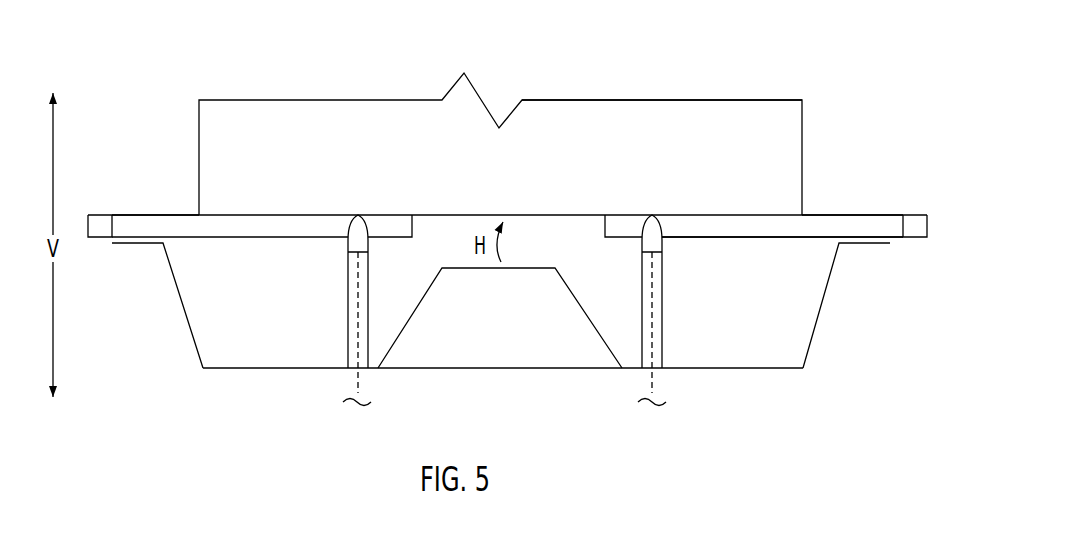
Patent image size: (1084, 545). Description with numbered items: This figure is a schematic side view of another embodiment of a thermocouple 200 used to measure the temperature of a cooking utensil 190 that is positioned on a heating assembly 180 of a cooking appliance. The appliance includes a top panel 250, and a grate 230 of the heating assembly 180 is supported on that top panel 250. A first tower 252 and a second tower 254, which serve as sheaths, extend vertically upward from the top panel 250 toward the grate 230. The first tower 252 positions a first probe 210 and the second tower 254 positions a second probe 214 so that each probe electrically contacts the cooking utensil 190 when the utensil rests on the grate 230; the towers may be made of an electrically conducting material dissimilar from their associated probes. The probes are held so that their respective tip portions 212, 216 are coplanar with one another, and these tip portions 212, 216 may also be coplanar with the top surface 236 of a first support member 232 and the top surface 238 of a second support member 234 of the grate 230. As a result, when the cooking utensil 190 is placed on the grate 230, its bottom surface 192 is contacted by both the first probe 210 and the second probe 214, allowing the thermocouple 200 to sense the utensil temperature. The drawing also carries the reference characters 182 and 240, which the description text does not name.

The heating assembly 180 is at (165, 297).
The housing bottom wall 182 is at (462, 343).
The cooking utensil 190 is at (737, 120).
The bottom surface 192 is at (562, 220).
The thermocouple 200 is at (572, 163).
The first probe 210 is at (348, 228).
The tip portion 212 is at (369, 215).
The second probe 214 is at (662, 228).
The tip portion 216 is at (640, 213).
The grate 230 is at (847, 208).
The first support member 232 is at (128, 213).
The second support member 234 is at (888, 227).
The top surface 236 is at (169, 212).
The top surface 238 is at (809, 211).
The second plate end 240 is at (917, 215).
The top panel 250 is at (258, 365).
The first tower 252 is at (348, 300).
The second tower 254 is at (663, 302).